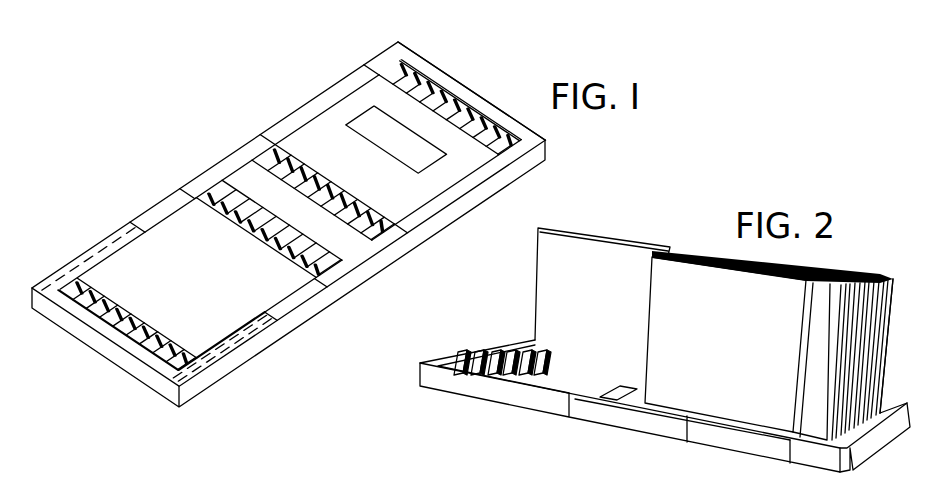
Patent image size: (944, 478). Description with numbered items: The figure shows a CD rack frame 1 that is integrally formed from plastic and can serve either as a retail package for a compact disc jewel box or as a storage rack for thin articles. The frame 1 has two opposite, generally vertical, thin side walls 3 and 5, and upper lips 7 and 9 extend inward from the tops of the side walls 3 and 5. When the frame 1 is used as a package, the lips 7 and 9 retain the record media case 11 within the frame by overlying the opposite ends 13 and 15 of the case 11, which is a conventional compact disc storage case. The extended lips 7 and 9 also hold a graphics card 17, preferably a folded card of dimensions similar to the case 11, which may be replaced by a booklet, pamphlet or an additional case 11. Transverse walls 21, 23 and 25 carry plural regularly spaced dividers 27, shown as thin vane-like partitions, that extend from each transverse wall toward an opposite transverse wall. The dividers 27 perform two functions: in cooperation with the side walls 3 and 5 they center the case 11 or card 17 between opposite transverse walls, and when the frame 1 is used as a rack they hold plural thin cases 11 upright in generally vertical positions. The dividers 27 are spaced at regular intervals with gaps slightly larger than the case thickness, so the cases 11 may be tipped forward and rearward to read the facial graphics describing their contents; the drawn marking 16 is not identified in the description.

In FIG. 1, the CD rack frame 1 is at (335, 72).
In FIG. 2, the CD rack frame 1 is at (466, 406).
In FIG. 1, the side wall 3 is at (405, 252).
In FIG. 2, the side wall 3 is at (541, 405).
In FIG. 1, the side wall 5 is at (240, 152).
In FIG. 1, the upper lip 7 is at (458, 188).
In FIG. 1, the upper lip 9 is at (306, 128).
In FIG. 1, the record media case 11 is at (107, 279).
In FIG. 2, the record media case 11 is at (536, 263).
In FIG. 1, the end of the case 13 is at (285, 348).
In FIG. 1, the end of the case 15 is at (112, 242).
In FIG. 1, the graphics card 17 is at (468, 162).
In FIG. 1, the transverse wall 21 is at (118, 354).
In FIG. 2, the transverse wall 21 is at (478, 354).
In FIG. 1, the transverse wall 23 is at (507, 106).
In FIG. 2, the transverse wall 23 is at (866, 450).
In FIG. 1, the transverse wall 25 is at (310, 230).
In FIG. 2, the transverse wall 25 is at (630, 386).
In FIG. 1, the dividers 27 is at (436, 94).
In FIG. 2, the dividers 27 is at (518, 348).
In FIG. 2, the end 16 is at (610, 472).